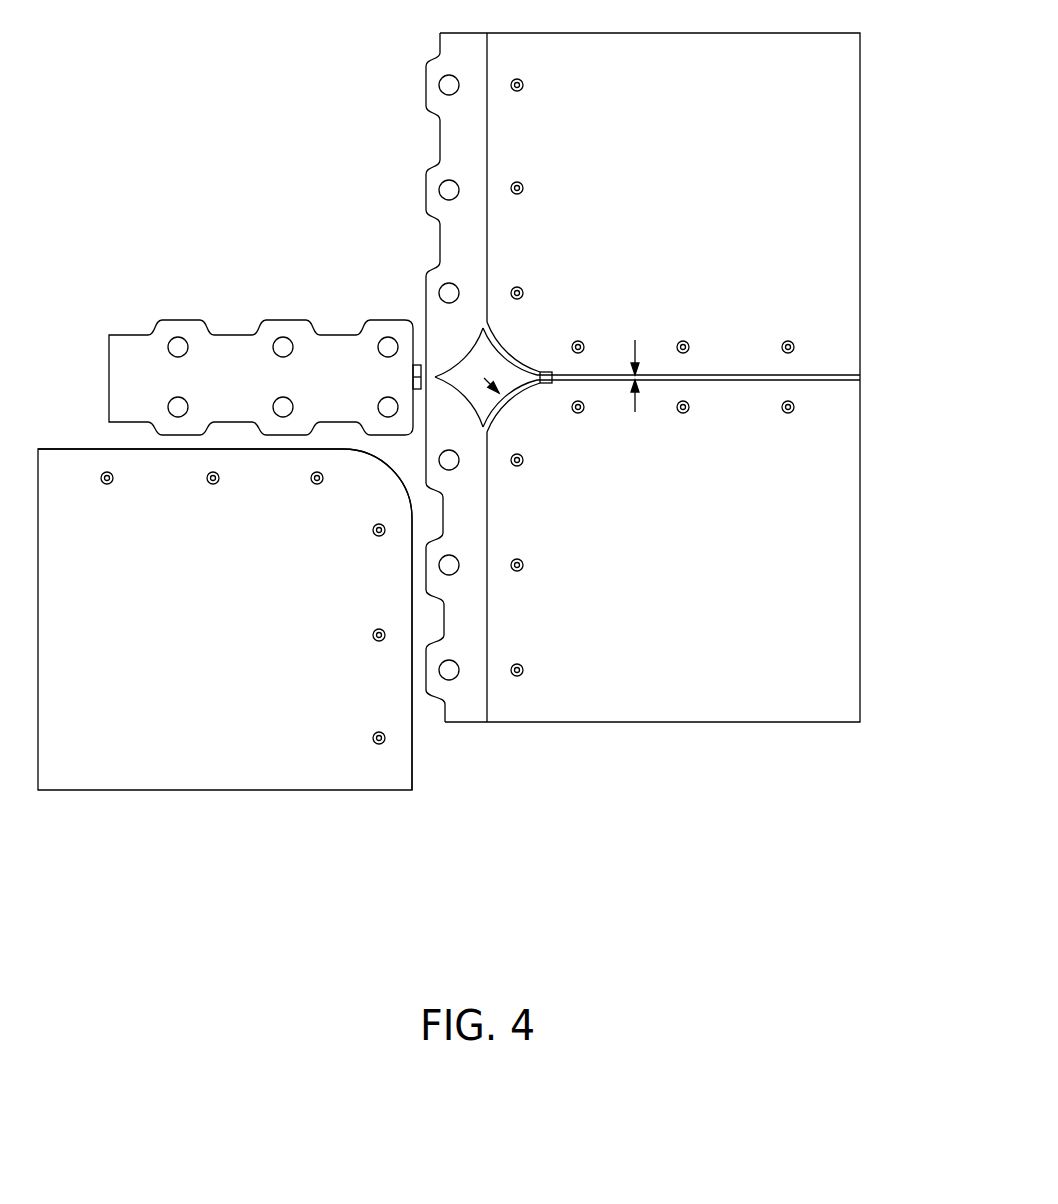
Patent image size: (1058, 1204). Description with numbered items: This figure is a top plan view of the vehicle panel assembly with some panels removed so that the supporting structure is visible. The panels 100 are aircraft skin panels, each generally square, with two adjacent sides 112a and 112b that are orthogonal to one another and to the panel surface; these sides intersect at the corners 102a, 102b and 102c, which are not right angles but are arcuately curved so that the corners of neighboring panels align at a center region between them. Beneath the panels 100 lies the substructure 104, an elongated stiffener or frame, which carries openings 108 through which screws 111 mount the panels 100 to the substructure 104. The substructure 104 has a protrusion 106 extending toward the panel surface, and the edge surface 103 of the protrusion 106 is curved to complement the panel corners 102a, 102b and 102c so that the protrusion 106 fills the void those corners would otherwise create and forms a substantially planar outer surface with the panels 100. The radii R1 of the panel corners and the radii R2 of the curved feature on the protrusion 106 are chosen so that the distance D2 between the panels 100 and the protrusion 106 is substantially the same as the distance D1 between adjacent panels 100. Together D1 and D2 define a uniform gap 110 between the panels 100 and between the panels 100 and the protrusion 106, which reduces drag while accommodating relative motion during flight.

The panel 100 is at (862, 172).
The corner 102a is at (506, 352).
The corner 102b is at (498, 418).
The corner 102c is at (395, 475).
The edge surface of the protrusion 103 is at (512, 358).
The substructure 104 is at (440, 242).
The protrusion 106 is at (463, 358).
The openings 108 is at (440, 190).
The gap 110 is at (836, 375).
The screws 111 is at (525, 188).
The side 112a is at (489, 130).
The side 112b is at (411, 670).
The distance between adjacent panels D1 is at (631, 393).
The distance between the panels and the substructure's feature D2 is at (509, 403).
The radii of the panels R1 is at (388, 473).
The radii of the curvature on the feature on the substructure R2 is at (463, 398).